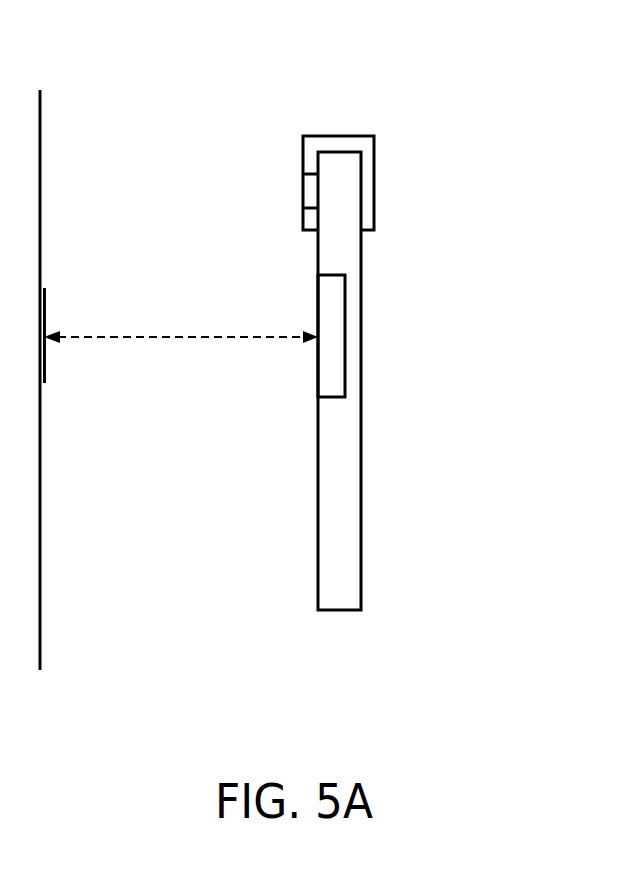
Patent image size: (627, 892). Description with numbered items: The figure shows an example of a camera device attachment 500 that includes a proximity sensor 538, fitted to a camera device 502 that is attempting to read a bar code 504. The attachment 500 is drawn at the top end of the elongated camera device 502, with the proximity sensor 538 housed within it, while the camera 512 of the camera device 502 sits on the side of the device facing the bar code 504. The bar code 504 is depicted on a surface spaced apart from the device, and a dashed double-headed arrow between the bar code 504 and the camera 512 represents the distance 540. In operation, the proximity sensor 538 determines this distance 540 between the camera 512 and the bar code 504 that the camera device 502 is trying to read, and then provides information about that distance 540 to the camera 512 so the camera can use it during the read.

The proximity sensor 538 is at (313, 174).
The camera device attachment 500 is at (374, 153).
The distance 540 is at (188, 303).
The camera 512 is at (345, 336).
The bar code 504 is at (46, 365).
The camera device 502 is at (361, 495).